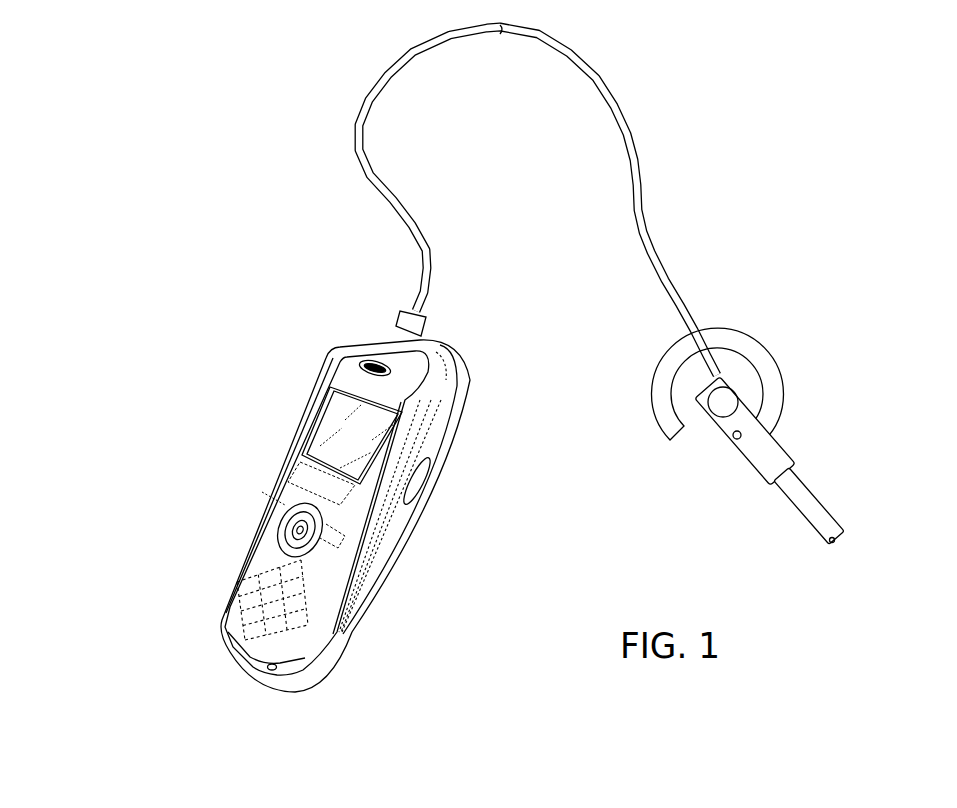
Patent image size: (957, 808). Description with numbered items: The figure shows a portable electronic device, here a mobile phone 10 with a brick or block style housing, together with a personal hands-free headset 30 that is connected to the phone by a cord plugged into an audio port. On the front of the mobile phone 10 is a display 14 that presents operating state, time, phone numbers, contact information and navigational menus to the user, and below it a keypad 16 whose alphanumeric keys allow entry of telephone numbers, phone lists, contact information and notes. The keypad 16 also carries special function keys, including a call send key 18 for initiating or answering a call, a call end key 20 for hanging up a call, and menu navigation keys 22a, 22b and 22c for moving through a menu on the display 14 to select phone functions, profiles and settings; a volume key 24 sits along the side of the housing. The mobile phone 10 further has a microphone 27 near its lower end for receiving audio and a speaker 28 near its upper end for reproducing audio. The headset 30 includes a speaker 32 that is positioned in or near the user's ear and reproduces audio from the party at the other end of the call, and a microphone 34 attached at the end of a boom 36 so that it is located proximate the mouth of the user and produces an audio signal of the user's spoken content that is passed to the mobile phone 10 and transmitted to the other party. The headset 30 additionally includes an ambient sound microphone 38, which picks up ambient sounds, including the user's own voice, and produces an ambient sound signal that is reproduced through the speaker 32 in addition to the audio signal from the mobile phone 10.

The mobile phone 10 is at (117, 283).
The display 14 is at (337, 432).
The keypad 16 is at (163, 590).
The call send key 18 is at (277, 502).
The call end key 20 is at (333, 531).
The menu navigation key 22a is at (283, 533).
The menu navigation key 22b is at (312, 540).
The menu navigation key 22c is at (300, 533).
The volume key 24 is at (417, 483).
The microphone 27 is at (270, 671).
The speaker 28 is at (366, 362).
The PHF headset 30 is at (762, 300).
The speaker 32 is at (730, 400).
The microphone 34 is at (832, 541).
The boom 36 is at (803, 493).
The ambient sound microphone 38 is at (737, 439).